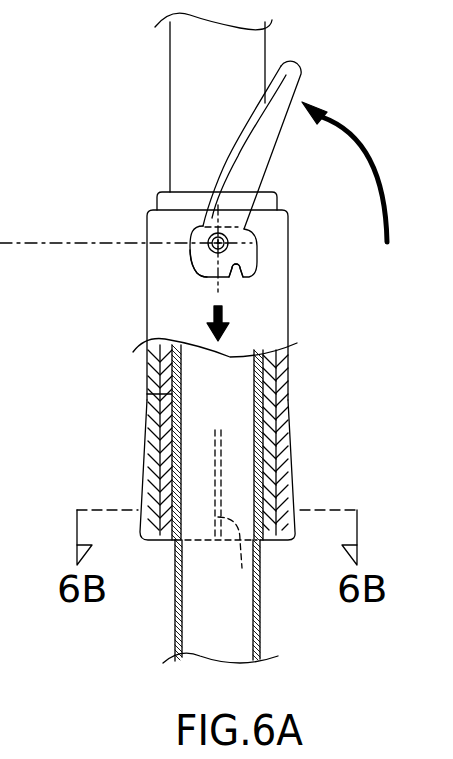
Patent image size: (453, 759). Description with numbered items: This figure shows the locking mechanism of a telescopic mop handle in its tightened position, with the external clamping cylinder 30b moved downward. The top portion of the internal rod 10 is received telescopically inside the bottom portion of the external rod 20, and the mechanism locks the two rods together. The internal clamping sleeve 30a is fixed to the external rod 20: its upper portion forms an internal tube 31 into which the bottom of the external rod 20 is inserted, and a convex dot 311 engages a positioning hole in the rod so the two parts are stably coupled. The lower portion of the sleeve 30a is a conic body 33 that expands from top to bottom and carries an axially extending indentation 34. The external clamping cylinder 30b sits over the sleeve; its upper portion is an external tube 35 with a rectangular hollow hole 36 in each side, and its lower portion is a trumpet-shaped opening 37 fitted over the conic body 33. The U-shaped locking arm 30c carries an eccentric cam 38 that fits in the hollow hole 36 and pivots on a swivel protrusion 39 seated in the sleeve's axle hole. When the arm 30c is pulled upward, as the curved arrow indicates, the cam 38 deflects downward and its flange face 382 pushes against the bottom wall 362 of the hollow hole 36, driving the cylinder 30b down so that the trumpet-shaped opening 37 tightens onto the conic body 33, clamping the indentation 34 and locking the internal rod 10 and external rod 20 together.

The internal rod 10 is at (260, 625).
The external rod 20 is at (245, 53).
The internal clamping sleeve 30a is at (181, 178).
The external clamping cylinder 30b is at (126, 336).
The U-shaped locking arm 30c is at (268, 148).
The internal tube 31 is at (166, 196).
The conic body 33 is at (163, 530).
The indentation 34 is at (267, 577).
The external tube 35 is at (163, 232).
The hollow hole 36 is at (200, 274).
The trumpet-shaped opening 37 is at (145, 487).
The eccentric cam 38 is at (226, 279).
The swivel protrusion 39 is at (228, 243).
The convex dot 311 is at (160, 394).
The bottom wall 362 is at (240, 264).
The flange face 382 is at (198, 271).